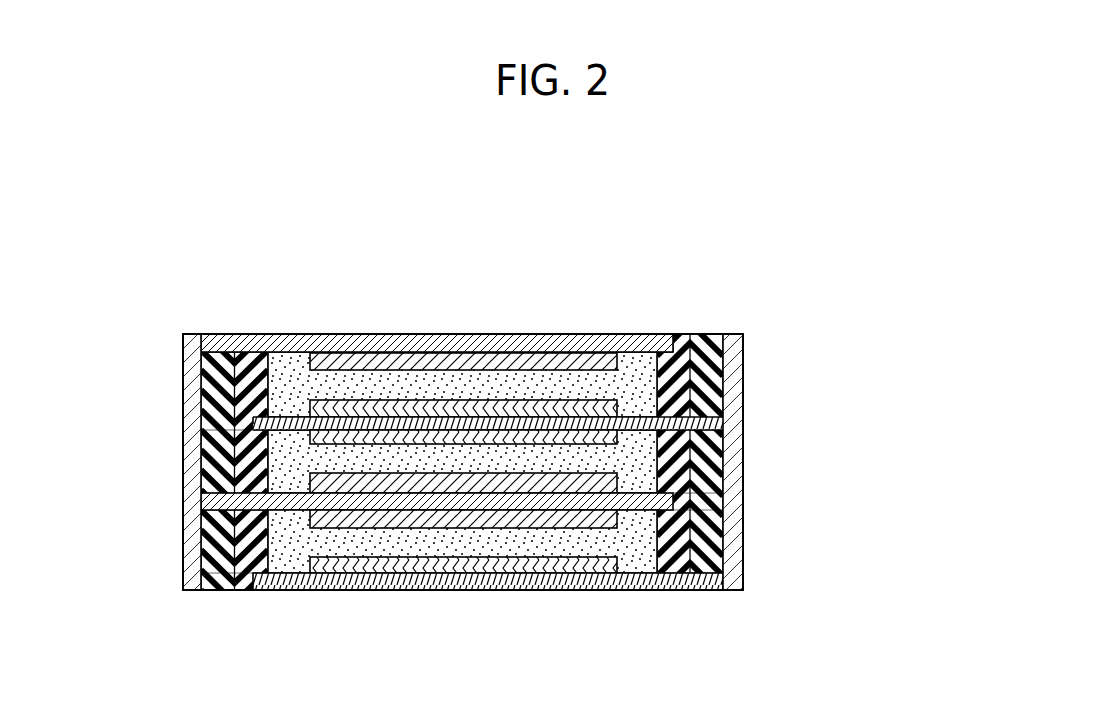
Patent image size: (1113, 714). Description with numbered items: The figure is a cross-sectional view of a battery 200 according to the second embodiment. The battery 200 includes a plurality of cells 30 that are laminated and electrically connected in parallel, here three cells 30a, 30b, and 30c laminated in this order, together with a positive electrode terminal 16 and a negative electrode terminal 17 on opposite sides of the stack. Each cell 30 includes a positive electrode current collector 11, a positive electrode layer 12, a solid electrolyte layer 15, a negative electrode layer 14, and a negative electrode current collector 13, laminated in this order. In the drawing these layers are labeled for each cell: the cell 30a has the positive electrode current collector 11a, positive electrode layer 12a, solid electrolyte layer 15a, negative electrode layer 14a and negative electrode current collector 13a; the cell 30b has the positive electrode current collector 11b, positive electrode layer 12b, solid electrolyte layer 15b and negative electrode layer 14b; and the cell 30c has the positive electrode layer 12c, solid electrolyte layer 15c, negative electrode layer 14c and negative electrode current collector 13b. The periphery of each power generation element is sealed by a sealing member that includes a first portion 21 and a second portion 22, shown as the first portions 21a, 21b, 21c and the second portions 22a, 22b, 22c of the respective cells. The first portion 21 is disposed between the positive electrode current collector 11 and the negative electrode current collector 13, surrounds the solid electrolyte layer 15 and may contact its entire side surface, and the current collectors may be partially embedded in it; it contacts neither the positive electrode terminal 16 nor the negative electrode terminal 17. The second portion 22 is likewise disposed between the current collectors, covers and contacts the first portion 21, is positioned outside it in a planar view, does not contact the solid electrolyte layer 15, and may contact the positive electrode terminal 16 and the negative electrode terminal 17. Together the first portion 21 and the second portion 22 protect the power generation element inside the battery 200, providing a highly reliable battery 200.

The battery 200 is at (576, 405).
The positive electrode current collector 11 is at (582, 292).
The first insulating layer of unit 30a 11a is at (745, 348).
The positive electrode current collector 11b is at (745, 497).
The positive electrode layer 12 is at (636, 318).
The first internal electrode of unit 30a 12a is at (745, 365).
The first internal electrode of unit 30b 12b is at (745, 477).
The first internal electrode of unit 30c 12c is at (745, 543).
The negative electrode current collector 13 is at (615, 385).
The negative electrode current collector 13a is at (745, 418).
The piezoelectric layer of unit 30c 13b is at (745, 588).
The negative electrode layer 14 is at (608, 381).
The second insulating layer of unit 30a 14a is at (745, 398).
The second insulating layer of unit 30b 14b is at (745, 432).
The second insulating layer of unit 30c 14c is at (745, 573).
The solid electrolyte layer 15 is at (636, 358).
The second internal electrode of unit 30a 15a is at (745, 382).
The second internal electrode of unit 30b 15b is at (745, 447).
The second internal electrode of unit 30c 15c is at (745, 558).
The positive electrode terminal 16 is at (193, 334).
The negative electrode terminal 17 is at (733, 334).
The first portion 21 is at (365, 349).
The connection conductor of unit 30a 21a is at (655, 405).
The connection conductor of unit 30b 21b is at (590, 470).
The connection conductor of unit 30c 21c is at (580, 565).
The second portion 22 is at (463, 407).
The external electrode of unit 30a 22a is at (707, 336).
The external electrode of unit 30b 22b is at (228, 455).
The external electrode of unit 30c 22c is at (228, 535).
The cell 30 is at (639, 328).
The cell 30a is at (639, 328).
The cell 30b is at (639, 457).
The cell 30c is at (665, 594).